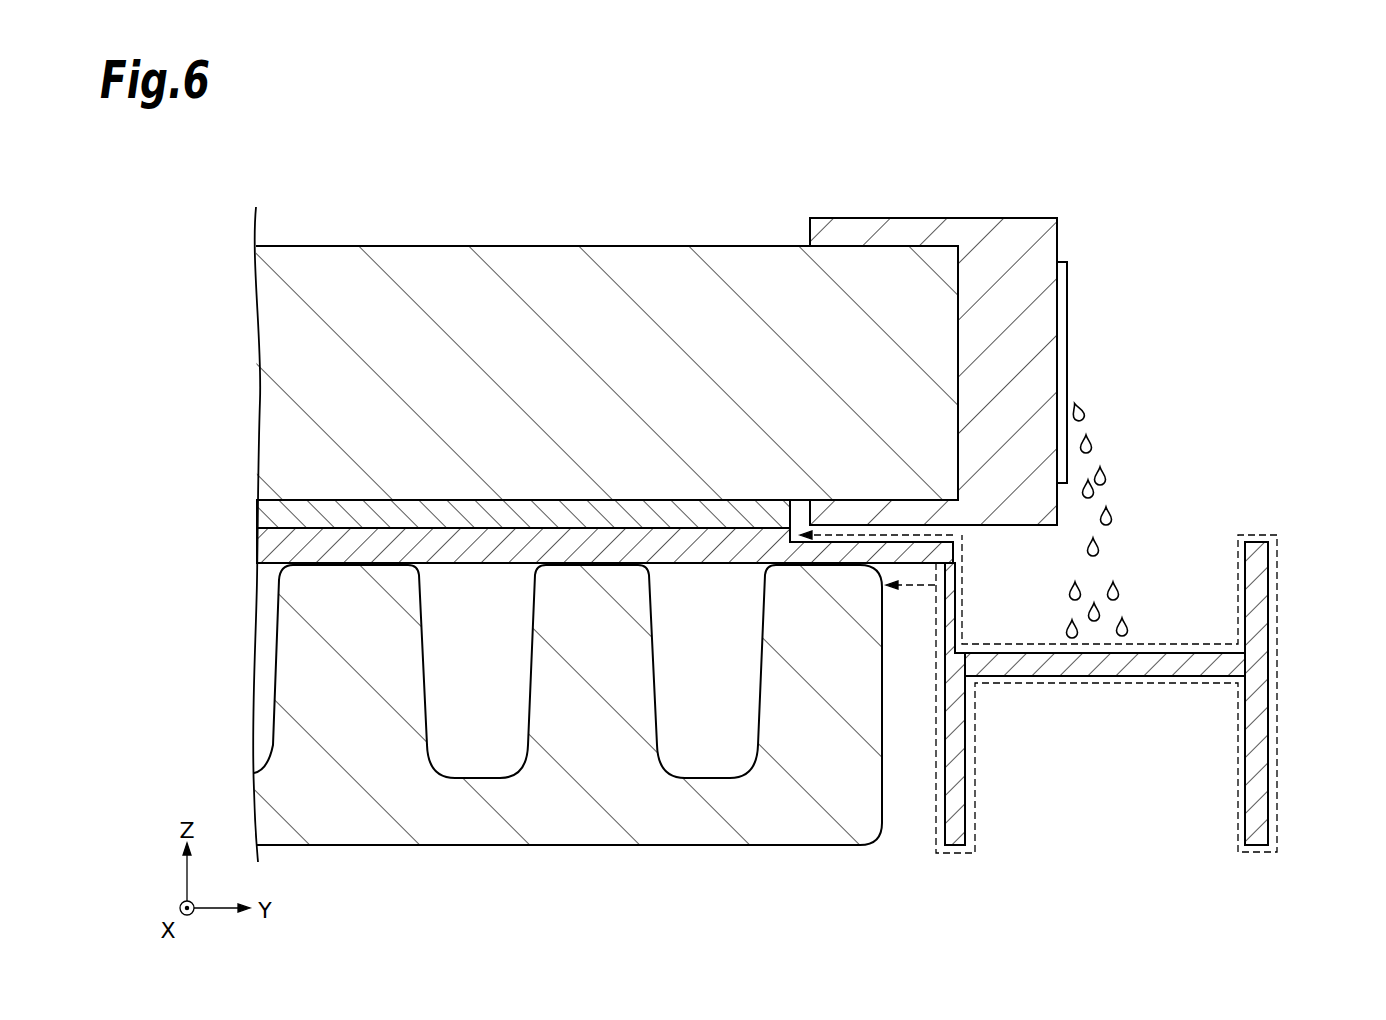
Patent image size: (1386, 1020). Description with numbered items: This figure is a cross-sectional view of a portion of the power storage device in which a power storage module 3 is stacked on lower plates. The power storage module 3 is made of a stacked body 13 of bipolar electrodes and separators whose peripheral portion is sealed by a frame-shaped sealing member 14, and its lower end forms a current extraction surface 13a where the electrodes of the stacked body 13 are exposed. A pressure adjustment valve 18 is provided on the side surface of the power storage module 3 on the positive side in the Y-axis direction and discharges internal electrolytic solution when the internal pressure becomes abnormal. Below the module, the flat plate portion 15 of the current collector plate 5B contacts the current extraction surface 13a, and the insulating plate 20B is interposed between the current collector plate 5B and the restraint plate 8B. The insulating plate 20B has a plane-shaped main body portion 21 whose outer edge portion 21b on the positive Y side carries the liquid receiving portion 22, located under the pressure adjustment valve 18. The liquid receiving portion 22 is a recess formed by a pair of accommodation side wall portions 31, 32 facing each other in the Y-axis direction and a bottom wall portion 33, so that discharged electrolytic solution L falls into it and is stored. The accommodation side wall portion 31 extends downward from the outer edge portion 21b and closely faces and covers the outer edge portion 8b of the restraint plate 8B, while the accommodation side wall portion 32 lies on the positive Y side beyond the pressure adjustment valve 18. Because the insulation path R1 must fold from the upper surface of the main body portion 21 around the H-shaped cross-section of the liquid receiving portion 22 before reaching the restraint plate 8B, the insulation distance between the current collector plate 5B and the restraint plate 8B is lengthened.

The power storage module 3 is at (304, 236).
The stacked body 13 is at (706, 236).
The current extraction surface 13a is at (540, 244).
The sealing member 14 is at (1014, 214).
The pressure adjustment valve 18 is at (1074, 301).
The current collector plate 5B is at (320, 492).
The flat plate portion 15 is at (738, 497).
The main body portion 21 is at (245, 545).
The outer edge portion 21b is at (955, 542).
The insulating plate 20B is at (330, 570).
The restraint plate 8B is at (660, 848).
The outer edge portion 8b is at (882, 782).
The electrolytic solution L is at (1112, 516).
The path R1 is at (1279, 578).
The liquid receiving portion 22 is at (1150, 694).
The accommodation side wall portion 31 is at (965, 788).
The accommodation side wall portion 32 is at (1260, 794).
The bottom wall portion 33 is at (1140, 662).